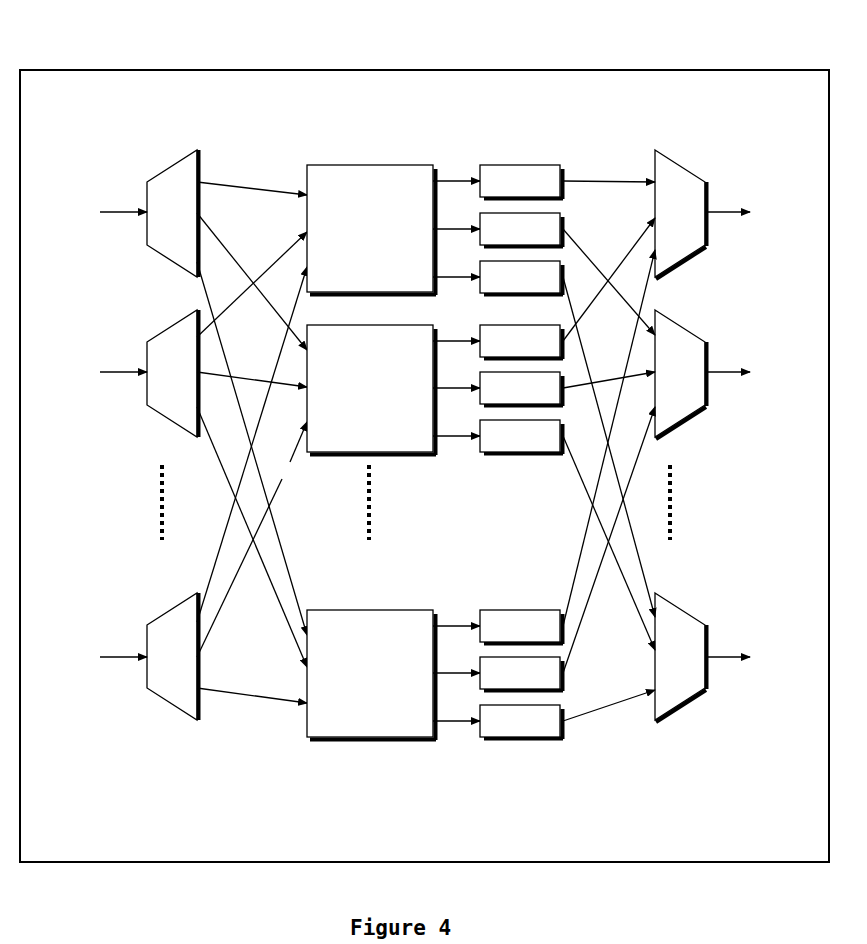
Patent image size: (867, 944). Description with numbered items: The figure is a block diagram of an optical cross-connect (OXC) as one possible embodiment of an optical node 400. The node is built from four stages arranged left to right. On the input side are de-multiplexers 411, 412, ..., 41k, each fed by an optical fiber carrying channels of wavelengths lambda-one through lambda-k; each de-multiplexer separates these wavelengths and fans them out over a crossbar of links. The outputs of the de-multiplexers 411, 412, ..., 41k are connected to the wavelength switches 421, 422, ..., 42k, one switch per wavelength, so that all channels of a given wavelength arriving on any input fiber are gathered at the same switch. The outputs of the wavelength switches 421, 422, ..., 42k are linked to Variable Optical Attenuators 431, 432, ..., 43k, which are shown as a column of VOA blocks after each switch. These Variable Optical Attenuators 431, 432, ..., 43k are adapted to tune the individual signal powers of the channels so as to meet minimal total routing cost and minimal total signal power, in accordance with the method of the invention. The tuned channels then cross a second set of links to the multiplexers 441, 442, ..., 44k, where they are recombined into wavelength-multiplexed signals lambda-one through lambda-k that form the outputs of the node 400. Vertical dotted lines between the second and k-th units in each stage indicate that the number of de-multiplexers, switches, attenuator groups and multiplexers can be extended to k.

The optical node 400 is at (433, 70).
The de-multiplexer 411 is at (163, 243).
The de-multiplexer 412 is at (163, 403).
The de-multiplexer 41k is at (163, 688).
The wavelength switch 421 is at (417, 165).
The wavelength switch 422 is at (368, 455).
The wavelength switch 42k is at (417, 608).
The Variable Optical Attenuator 431 is at (545, 165).
The Variable Optical Attenuator 432 is at (512, 455).
The Variable Optical Attenuator 43k is at (512, 608).
The multiplexer 441 is at (670, 260).
The multiplexer 442 is at (670, 420).
The multiplexer 44k is at (670, 705).